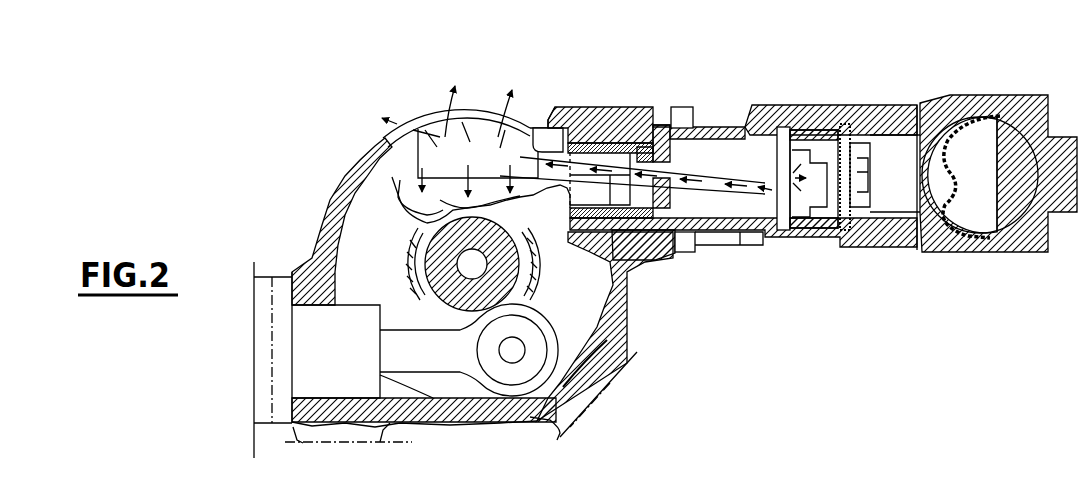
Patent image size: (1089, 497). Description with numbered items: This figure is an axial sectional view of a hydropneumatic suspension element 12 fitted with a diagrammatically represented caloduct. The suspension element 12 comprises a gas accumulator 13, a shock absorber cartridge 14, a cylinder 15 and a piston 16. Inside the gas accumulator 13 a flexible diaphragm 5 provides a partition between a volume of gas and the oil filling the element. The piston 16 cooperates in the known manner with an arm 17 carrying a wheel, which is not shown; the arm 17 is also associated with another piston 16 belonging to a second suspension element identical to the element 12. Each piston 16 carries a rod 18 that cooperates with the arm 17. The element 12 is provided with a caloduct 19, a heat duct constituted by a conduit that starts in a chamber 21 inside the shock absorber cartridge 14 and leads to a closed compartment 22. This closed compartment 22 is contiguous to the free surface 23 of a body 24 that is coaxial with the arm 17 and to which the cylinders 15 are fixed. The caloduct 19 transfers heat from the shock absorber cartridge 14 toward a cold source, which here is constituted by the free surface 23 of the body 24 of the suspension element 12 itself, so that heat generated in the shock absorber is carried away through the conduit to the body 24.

The flexible diaphragm 5 is at (953, 202).
The suspension element 12 is at (735, 110).
The gas accumulator 13 is at (998, 149).
The shock absorber cartridge 14 is at (860, 143).
The cylinder 15 is at (780, 104).
The piston 16 is at (683, 118).
The arm 17 is at (418, 238).
The rod 18 is at (437, 367).
The caloduct 19 is at (700, 166).
The chamber 21 is at (796, 160).
The closed compartment 22 is at (440, 137).
The free surface 23 is at (478, 108).
The body 24 is at (620, 327).